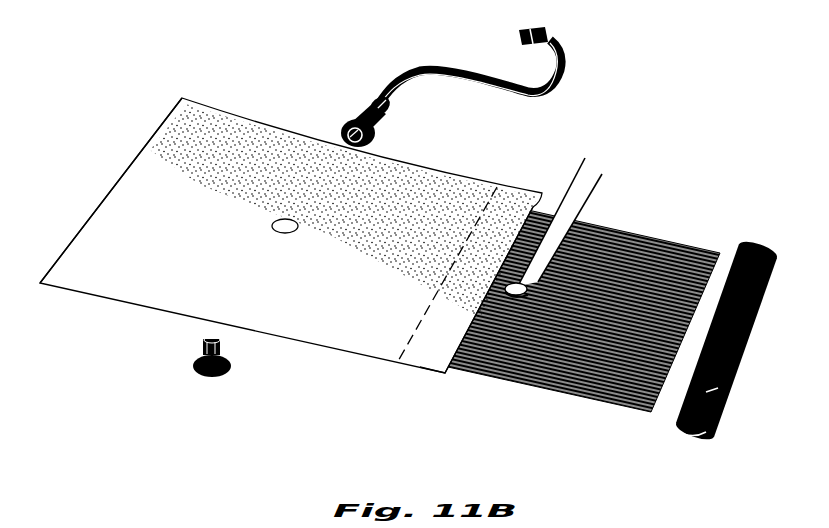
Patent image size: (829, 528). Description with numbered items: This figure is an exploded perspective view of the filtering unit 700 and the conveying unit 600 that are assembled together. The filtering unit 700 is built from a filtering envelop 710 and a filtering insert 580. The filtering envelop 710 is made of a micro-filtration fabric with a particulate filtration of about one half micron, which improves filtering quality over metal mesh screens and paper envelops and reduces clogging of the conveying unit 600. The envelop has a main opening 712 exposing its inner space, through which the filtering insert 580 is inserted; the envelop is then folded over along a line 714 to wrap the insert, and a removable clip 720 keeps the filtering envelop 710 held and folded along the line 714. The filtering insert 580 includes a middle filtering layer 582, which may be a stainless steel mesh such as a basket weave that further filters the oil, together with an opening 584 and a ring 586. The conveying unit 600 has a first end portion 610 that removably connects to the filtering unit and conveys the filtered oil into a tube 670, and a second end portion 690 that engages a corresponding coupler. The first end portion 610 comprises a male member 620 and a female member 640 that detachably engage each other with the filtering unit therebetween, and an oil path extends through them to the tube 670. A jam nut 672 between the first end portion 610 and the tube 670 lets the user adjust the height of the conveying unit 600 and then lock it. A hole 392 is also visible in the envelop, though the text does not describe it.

The filtering unit 700 is at (279, 235).
The filtering envelop 710 is at (118, 234).
The line 714 is at (420, 320).
The main opening 712 is at (447, 375).
The aperture 392 is at (297, 227).
The filtering insert 580 is at (603, 340).
The middle filtering layer 582 is at (590, 385).
The opening 584 is at (585, 158).
The ring 586 is at (602, 174).
The removable clip 720 is at (722, 389).
The conveying unit 600 is at (483, 62).
The tube 670 is at (548, 84).
The second end portion 690 is at (521, 33).
The jam nut 672 is at (376, 107).
The first end portion 610 is at (289, 247).
The female member 640 is at (345, 118).
The male member 620 is at (231, 366).